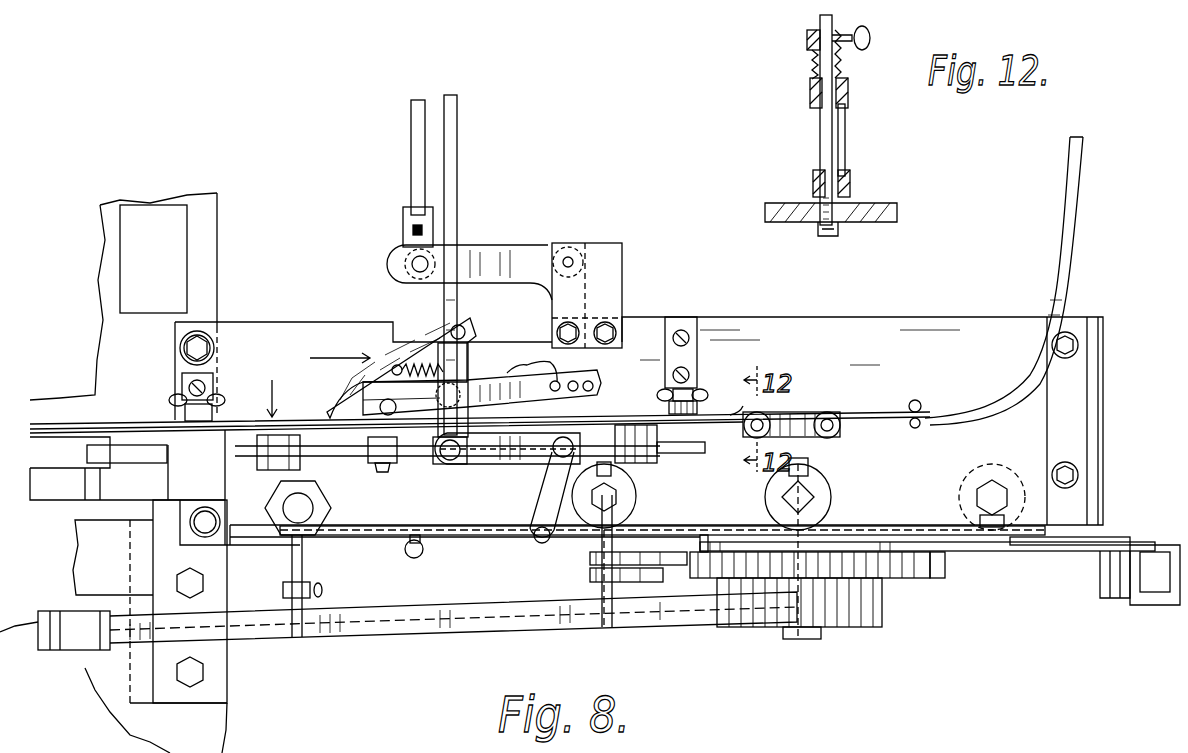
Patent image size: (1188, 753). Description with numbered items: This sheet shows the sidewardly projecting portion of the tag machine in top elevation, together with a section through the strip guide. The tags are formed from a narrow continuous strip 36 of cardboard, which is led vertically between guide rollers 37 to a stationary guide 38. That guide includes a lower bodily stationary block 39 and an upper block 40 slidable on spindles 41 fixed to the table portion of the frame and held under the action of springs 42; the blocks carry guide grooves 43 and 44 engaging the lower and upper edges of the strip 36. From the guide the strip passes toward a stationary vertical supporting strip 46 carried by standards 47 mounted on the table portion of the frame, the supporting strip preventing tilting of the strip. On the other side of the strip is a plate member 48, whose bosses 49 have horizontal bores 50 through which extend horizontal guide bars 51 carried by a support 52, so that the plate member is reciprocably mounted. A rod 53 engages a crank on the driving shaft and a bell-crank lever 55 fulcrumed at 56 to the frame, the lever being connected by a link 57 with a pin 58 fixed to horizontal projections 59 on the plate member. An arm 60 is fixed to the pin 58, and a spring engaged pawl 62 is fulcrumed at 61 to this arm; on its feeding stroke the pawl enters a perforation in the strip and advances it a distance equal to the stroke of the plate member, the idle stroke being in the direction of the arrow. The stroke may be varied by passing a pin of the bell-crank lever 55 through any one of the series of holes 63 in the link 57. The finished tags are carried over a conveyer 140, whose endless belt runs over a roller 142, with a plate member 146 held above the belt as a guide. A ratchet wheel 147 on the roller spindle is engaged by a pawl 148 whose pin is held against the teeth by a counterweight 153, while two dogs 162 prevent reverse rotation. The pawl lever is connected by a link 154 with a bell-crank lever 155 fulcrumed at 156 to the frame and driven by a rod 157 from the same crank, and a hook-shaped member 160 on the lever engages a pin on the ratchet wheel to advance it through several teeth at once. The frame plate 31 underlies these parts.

In FIG. 8, the frame plate 31 is at (757, 317).
In FIG. 8, the rod 53 is at (410, 160).
In FIG. 8, the rod 157 is at (457, 162).
In FIG. 8, the bell-crank lever 55 is at (507, 255).
In FIG. 8, the fulcrum 56 is at (570, 260).
In FIG. 8, the spring engaged pawl 62 is at (425, 348).
In FIG. 8, the fulcrum 61 is at (461, 325).
In FIG. 8, the arm 60 is at (470, 350).
In FIG. 8, the horizontal projections 59 is at (389, 398).
In FIG. 8, the pin 58 is at (437, 400).
In FIG. 8, the link 57 is at (512, 401).
In FIG. 8, the holes 63 is at (552, 380).
In FIG. 8, the stationary vertical supporting strip 46 is at (625, 416).
In FIG. 8, the standards 47 is at (698, 410).
In FIG. 8, the plate member 48 is at (660, 424).
In FIG. 8, the horizontal guide bars 51 is at (706, 450).
In FIG. 8, the bosses 49 is at (270, 471).
In FIG. 8, the horizontal bores 50 is at (318, 470).
In FIG. 8, the support 52 is at (380, 465).
In FIG. 8, the bell-crank lever 155 is at (504, 462).
In FIG. 8, the fulcrum 156 is at (548, 470).
In FIG. 8, the link 154 is at (700, 527).
In FIG. 8, the hook-shaped member 160 is at (895, 541).
In FIG. 8, the dogs 162 is at (590, 576).
In FIG. 8, the roller 142 is at (853, 627).
In FIG. 8, the ratchet wheel 147 is at (941, 572).
In FIG. 8, the pawl 148 is at (1045, 552).
In FIG. 8, the counterweight 153 is at (1102, 581).
In FIG. 8, the plate member 146 is at (389, 612).
In FIG. 8, the conveyer 140 is at (38, 640).
In FIG. 8, the stationary guide 38 is at (800, 418).
In FIG. 8, the spindles 41 is at (759, 419).
In FIG. 12, the spindles 41 is at (820, 133).
In FIG. 8, the guide rollers 37 is at (915, 400).
In FIG. 8, the strip 36 is at (1064, 176).
In FIG. 12, the strip 36 is at (846, 132).
In FIG. 12, the springs 42 is at (806, 50).
In FIG. 12, the upper block 40 is at (809, 95).
In FIG. 12, the guide groove 44 is at (849, 98).
In FIG. 12, the guide groove 43 is at (851, 176).
In FIG. 12, the lower bodily stationary block 39 is at (851, 185).